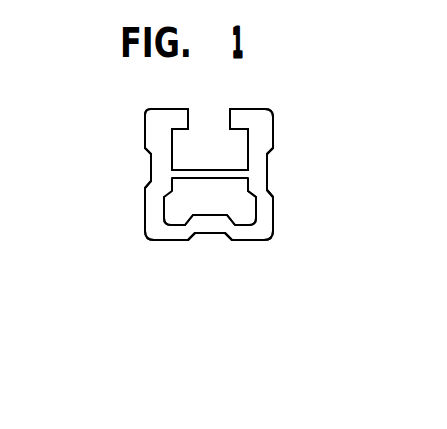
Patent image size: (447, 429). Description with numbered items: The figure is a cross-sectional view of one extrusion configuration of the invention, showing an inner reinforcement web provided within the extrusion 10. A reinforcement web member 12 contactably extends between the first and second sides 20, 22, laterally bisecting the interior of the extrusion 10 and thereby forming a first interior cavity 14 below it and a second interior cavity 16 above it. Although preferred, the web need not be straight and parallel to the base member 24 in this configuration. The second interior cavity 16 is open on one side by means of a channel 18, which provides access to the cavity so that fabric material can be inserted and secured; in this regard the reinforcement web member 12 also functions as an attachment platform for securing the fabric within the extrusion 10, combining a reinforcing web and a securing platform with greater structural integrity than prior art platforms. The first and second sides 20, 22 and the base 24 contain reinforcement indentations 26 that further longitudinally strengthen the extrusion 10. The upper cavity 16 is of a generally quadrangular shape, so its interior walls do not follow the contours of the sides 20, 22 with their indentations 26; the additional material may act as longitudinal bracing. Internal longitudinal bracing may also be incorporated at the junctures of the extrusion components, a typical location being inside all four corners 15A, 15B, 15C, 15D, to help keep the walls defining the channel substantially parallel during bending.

The extrusion 10 is at (86, 100).
The reinforcement web member 12 is at (268, 158).
The first interior cavity 14 is at (182, 195).
The corner 15A is at (166, 149).
The corner 15B is at (173, 224).
The corner 15C is at (257, 211).
The corner 15D is at (233, 135).
The second interior cavity 16 is at (200, 145).
The channel 18 is at (189, 108).
The first side 20 is at (262, 132).
The second side 22 is at (164, 159).
The base member 24 is at (195, 230).
The reinforcement indentations 26 is at (265, 173).